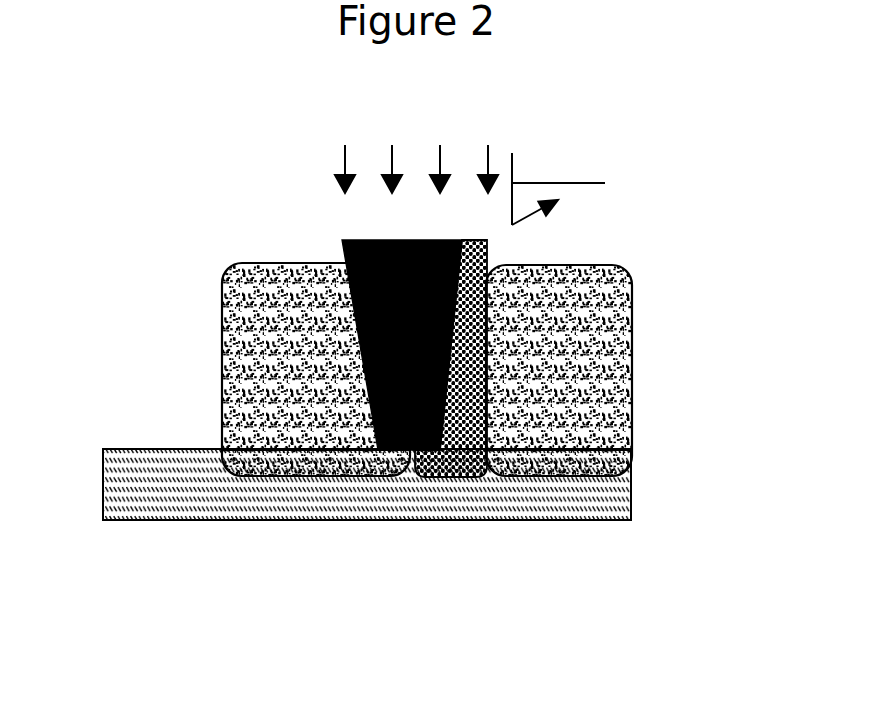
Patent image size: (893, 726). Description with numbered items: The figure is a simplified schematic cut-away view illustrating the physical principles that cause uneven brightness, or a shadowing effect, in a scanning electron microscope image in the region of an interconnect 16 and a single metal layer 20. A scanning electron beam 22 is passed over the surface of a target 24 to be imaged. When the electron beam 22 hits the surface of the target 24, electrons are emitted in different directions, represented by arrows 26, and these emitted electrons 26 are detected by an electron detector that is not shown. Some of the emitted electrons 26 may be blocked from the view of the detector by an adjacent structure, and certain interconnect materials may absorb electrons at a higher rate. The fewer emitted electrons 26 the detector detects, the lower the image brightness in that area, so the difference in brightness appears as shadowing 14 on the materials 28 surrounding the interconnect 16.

The shadowing 14 is at (470, 245).
The interconnect 16 is at (462, 460).
The metal layer 20 is at (533, 512).
The scanning electron beam 22 is at (416, 147).
The target 24 is at (274, 221).
The arrows 26 is at (586, 189).
The materials 28 is at (222, 312).